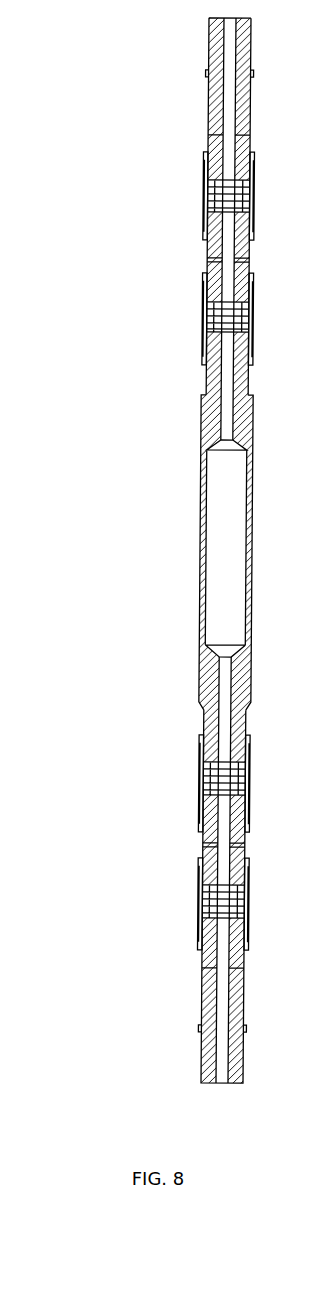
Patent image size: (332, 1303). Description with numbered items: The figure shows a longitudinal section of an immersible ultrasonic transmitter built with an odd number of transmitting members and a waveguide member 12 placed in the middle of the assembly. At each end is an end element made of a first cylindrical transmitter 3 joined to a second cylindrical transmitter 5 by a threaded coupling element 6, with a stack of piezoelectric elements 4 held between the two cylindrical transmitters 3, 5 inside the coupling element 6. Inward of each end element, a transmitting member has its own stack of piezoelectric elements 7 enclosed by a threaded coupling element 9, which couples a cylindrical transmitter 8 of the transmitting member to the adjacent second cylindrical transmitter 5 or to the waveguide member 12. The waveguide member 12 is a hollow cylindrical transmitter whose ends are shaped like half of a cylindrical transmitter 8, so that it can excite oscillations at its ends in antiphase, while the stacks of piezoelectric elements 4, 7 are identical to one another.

The first cylindrical transmitter 3 is at (210, 118).
The stack of piezoelectric elements 4 is at (204, 190).
The second cylindrical transmitter 5 is at (203, 843).
The coupling element 6 is at (204, 218).
The stack of piezoelectric elements 7 is at (204, 313).
The cylindrical transmitter of the transmitting member 8 is at (204, 270).
The coupling element of the transmitting member 9 is at (204, 345).
The waveguide member 12 is at (208, 410).